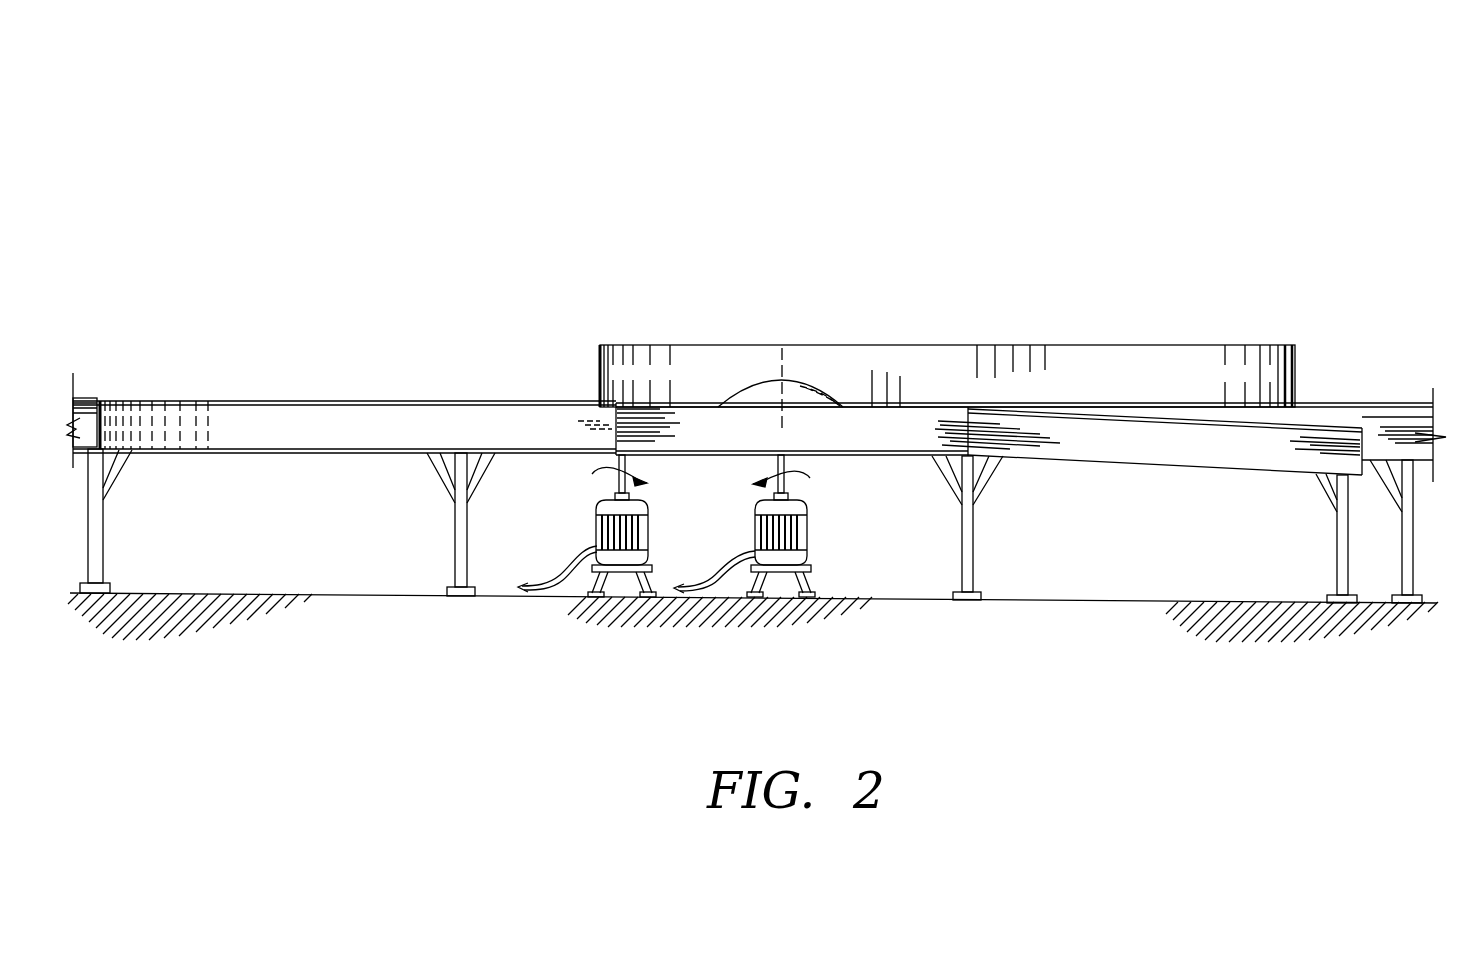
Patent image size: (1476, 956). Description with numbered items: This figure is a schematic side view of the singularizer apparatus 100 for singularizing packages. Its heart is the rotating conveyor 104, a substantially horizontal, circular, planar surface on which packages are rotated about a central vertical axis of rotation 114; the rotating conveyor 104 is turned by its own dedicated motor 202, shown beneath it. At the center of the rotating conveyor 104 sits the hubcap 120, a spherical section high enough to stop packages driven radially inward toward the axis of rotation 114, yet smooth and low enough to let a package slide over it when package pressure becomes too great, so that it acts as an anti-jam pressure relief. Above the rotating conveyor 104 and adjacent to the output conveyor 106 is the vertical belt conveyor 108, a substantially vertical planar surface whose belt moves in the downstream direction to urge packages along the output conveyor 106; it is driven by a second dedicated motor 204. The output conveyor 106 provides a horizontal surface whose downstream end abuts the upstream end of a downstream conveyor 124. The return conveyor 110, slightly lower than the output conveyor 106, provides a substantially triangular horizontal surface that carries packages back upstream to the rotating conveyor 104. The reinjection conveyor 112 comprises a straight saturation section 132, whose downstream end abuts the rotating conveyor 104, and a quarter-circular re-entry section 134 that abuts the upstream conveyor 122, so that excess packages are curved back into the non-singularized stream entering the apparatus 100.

The singularizer apparatus 100 is at (1122, 80).
The rotating conveyor 104 is at (925, 376).
The output conveyor 106 is at (1207, 377).
The vertical belt conveyor 108 is at (719, 313).
The return conveyor 110 is at (1123, 498).
The reinjection conveyor 112 is at (316, 372).
The axis of rotation 114 is at (780, 380).
The hubcap 120 is at (745, 388).
The upstream conveyor 122 is at (88, 372).
The downstream conveyor 124 is at (1374, 378).
The saturation section 132 is at (458, 401).
The re-entry section 134 is at (175, 398).
The dedicated motor 202 is at (809, 555).
The dedicated motor 204 is at (596, 536).